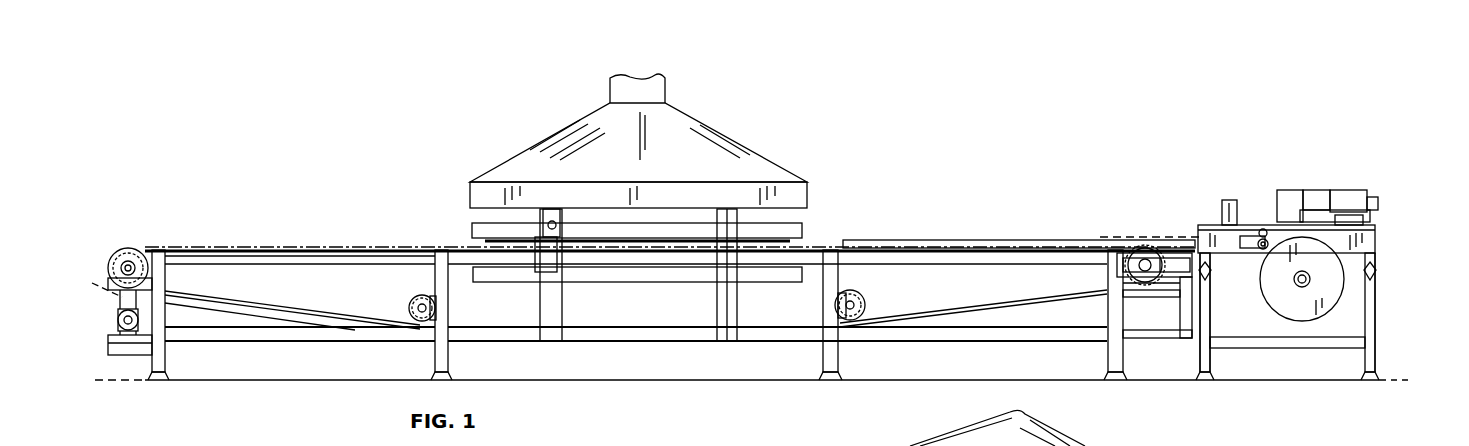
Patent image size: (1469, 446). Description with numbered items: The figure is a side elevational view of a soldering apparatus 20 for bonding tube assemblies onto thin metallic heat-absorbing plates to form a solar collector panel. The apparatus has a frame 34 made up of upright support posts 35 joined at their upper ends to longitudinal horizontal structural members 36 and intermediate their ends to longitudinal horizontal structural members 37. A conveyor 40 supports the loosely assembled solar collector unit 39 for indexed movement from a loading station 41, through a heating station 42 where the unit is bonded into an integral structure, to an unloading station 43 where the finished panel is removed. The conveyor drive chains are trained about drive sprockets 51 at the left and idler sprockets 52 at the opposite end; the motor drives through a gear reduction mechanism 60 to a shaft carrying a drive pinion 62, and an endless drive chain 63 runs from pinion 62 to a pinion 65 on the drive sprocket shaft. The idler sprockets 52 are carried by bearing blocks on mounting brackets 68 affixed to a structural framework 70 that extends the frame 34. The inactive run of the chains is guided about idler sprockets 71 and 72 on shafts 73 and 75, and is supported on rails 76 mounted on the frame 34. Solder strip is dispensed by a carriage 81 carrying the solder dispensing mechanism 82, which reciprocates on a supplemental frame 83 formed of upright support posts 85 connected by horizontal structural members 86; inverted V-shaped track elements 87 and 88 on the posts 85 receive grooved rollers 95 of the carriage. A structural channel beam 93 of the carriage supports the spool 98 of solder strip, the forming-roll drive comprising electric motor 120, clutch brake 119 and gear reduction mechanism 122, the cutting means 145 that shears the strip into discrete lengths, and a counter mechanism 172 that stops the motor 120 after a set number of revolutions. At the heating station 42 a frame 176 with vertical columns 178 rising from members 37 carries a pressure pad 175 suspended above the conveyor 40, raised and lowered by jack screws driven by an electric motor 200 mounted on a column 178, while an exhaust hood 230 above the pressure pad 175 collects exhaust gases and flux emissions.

The soldering apparatus 20 is at (935, 113).
The frame 34 is at (370, 342).
The upright support posts 35 is at (165, 352).
The horizontal structural members 36 is at (315, 252).
The horizontal structural members 37 is at (640, 340).
The solar collector unit 39 is at (892, 238).
The conveyor 40 is at (824, 242).
The loading station 41 is at (1012, 215).
The heating station 42 is at (722, 125).
The unloading station 43 is at (268, 238).
The drive sprockets 51 is at (125, 250).
The idler sprockets 52 is at (1145, 245).
The gear reduction mechanism 60 is at (128, 333).
The drive pinion 62 is at (118, 318).
The endless drive chain 63 is at (93, 280).
The pinion 65 is at (133, 265).
The mounting brackets 68 is at (1168, 253).
The structural framework 70 is at (1148, 342).
The idler sprocket 71 is at (408, 300).
The idler sprocket 72 is at (862, 298).
The shaft 73 is at (421, 314).
The shaft 75 is at (865, 305).
The rails 76 is at (284, 315).
The carriage 81 is at (1385, 225).
The solder dispensing mechanism 82 is at (1262, 228).
The supplemental frame 83 is at (1378, 332).
The upright support posts 85 is at (1377, 298).
The horizontal structural members 86 is at (1308, 345).
The track element 87 is at (1210, 285).
The track element 88 is at (1374, 275).
The structural channel beam 93 is at (1376, 240).
The rollers 95 is at (1212, 272).
The spool 98 is at (1287, 308).
The clutch brake 119 is at (1315, 190).
The electric motor 120 is at (1350, 190).
The gear reduction mechanism 122 is at (1282, 190).
The solder strip cutting means 145 is at (1225, 198).
The counter mechanism 172 is at (1372, 197).
The pressure pad 175 is at (470, 232).
The frame 176 is at (745, 310).
The columns 178 is at (556, 340).
The electric motor 200 is at (543, 268).
The exhaust hood 230 is at (545, 150).